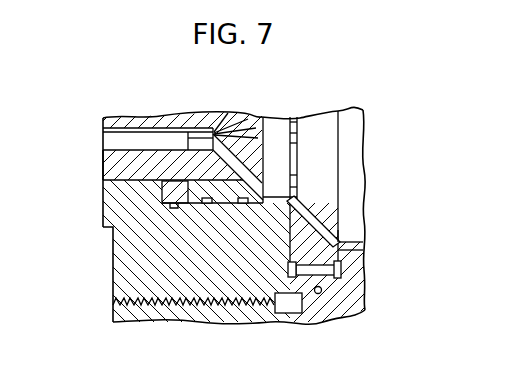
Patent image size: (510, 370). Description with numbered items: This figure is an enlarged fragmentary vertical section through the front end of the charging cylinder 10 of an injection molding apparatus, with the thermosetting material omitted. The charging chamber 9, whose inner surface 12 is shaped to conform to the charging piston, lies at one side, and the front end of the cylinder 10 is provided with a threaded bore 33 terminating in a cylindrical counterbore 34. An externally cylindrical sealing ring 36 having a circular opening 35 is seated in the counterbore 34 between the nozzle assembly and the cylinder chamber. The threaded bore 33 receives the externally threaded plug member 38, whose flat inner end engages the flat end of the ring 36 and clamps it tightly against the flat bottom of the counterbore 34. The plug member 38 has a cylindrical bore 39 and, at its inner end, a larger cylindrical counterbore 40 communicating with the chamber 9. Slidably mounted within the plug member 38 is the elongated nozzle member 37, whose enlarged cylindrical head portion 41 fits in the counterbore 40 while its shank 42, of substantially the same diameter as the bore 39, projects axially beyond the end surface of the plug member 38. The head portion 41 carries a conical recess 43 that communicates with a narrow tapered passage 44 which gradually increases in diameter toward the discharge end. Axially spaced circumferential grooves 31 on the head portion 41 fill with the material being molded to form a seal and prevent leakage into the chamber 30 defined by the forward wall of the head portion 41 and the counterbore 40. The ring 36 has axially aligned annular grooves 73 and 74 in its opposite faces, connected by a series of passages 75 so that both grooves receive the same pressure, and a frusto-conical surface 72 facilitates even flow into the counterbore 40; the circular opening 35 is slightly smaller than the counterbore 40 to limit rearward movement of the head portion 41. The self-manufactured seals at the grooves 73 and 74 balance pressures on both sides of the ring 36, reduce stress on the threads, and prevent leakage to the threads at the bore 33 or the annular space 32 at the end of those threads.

The charging chamber 9 is at (354, 124).
The charging cylinder 10 is at (374, 288).
The inner surface 12 is at (363, 248).
The chamber 30 is at (157, 187).
The circumferential grooves 31 is at (207, 204).
The annular space 32 is at (300, 313).
The threaded bore 33 is at (112, 300).
The cylindrical counterbore 34 is at (319, 294).
The circular opening 35 is at (365, 178).
The sealing ring 36 is at (318, 220).
The nozzle member 37 is at (119, 116).
The plug member 38 is at (106, 251).
The cylindrical bore 39 is at (107, 175).
The cylindrical counterbore 40 is at (175, 207).
The head portion 41 is at (159, 191).
The shank 42 is at (107, 166).
The conical recess 43 is at (233, 145).
The tapered passage 44 is at (163, 138).
The frusto-conical surface 72 is at (340, 234).
The annular groove 73 is at (362, 270).
The annular groove 74 is at (287, 268).
The passages 75 is at (262, 323).